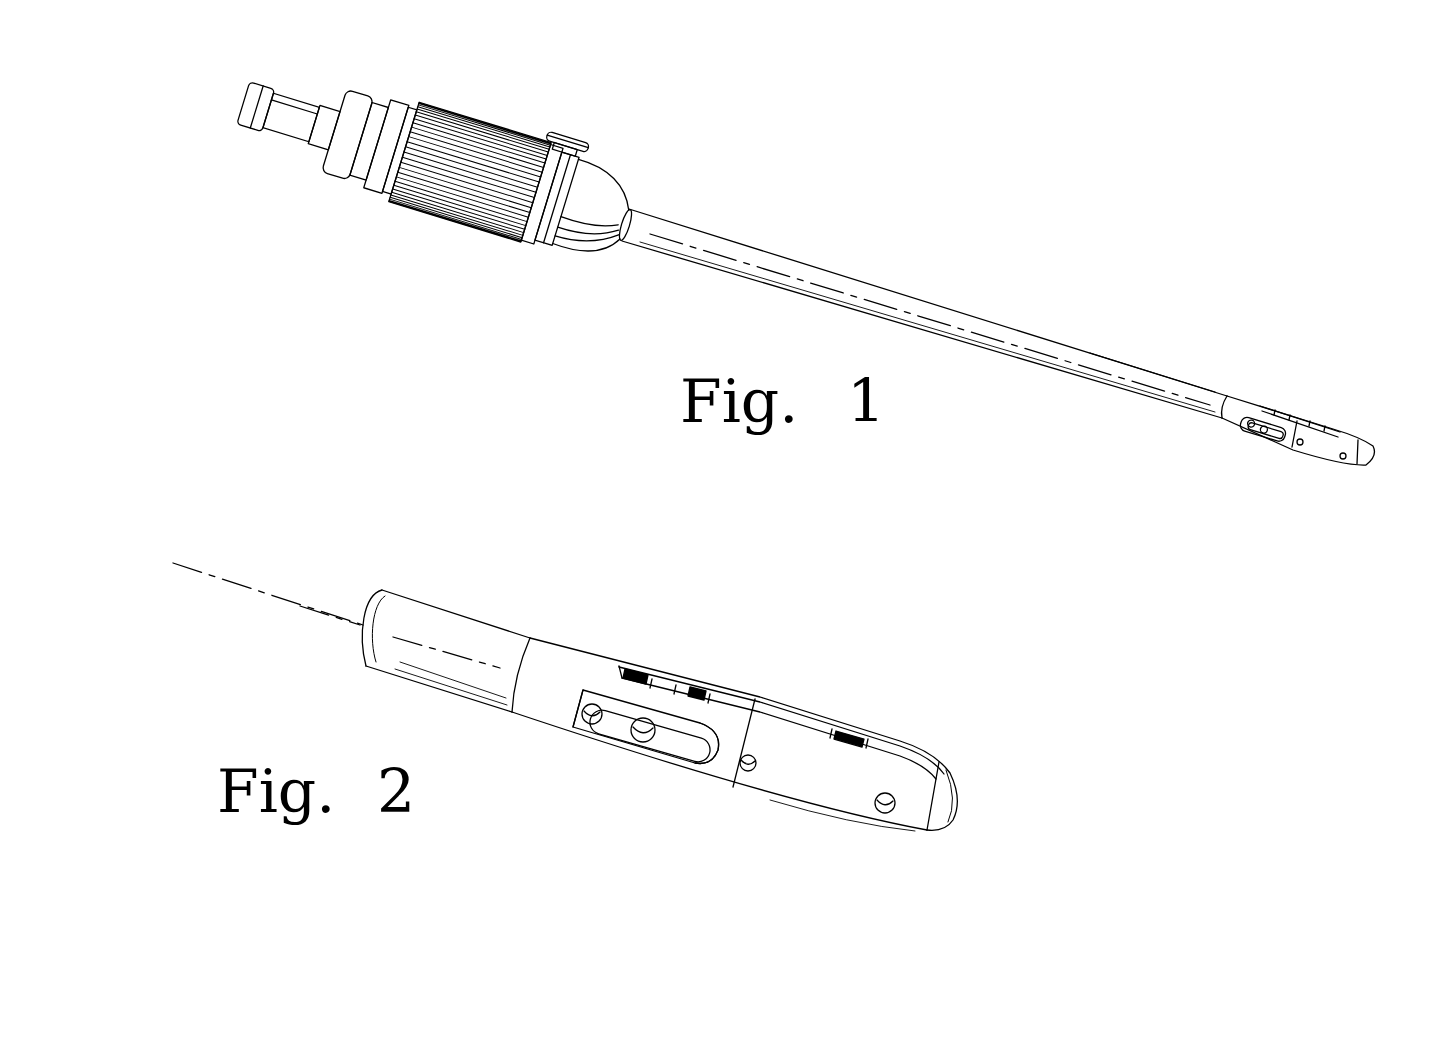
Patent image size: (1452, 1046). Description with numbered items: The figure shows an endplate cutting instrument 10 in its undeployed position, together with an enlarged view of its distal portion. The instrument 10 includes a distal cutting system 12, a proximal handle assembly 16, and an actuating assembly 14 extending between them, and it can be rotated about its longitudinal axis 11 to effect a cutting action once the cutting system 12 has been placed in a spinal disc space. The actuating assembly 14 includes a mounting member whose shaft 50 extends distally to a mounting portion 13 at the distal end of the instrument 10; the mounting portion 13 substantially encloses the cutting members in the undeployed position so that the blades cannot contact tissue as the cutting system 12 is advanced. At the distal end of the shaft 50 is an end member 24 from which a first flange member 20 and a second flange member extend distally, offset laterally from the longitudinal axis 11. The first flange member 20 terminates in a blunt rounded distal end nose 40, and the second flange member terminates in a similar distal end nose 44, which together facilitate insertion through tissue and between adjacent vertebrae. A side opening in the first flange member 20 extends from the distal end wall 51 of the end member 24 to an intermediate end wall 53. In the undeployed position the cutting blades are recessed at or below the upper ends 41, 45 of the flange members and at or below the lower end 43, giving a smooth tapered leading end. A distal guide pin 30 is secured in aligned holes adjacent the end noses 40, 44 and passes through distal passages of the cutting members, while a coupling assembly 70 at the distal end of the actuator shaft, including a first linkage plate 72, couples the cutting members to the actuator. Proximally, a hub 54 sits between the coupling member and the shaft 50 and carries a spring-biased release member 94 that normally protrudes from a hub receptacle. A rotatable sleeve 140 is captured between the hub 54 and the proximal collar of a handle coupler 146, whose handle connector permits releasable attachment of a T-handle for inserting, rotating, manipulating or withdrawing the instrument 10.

In FIG. 1, the endplate cutting instrument 10 is at (1060, 190).
In FIG. 2, the endplate cutting instrument 10 is at (593, 703).
In FIG. 1, the longitudinal axis 11 is at (692, 241).
In FIG. 2, the longitudinal axis 11 is at (196, 572).
In FIG. 1, the distal cutting system 12 is at (1356, 411).
In FIG. 2, the distal cutting system 12 is at (903, 731).
In FIG. 1, the mounting portion 13 is at (1326, 463).
In FIG. 2, the mounting portion 13 is at (773, 786).
In FIG. 1, the actuating assembly 14 is at (872, 266).
In FIG. 2, the actuating assembly 14 is at (451, 593).
In FIG. 1, the proximal handle assembly 16 is at (492, 104).
In FIG. 2, the first flange member 20 is at (848, 806).
In FIG. 2, the end member 24 is at (565, 660).
In FIG. 2, the distal guide pin 30 is at (692, 757).
In FIG. 2, the distal end nose 40 is at (940, 815).
In FIG. 2, the upper end 41 is at (738, 690).
In FIG. 2, the lower end 43 is at (865, 823).
In FIG. 2, the distal end nose 44 is at (958, 792).
In FIG. 2, the upper end 45 is at (795, 710).
In FIG. 1, the shaft 50 is at (1140, 372).
In FIG. 2, the shaft 50 is at (282, 632).
In FIG. 2, the distal end wall 51 is at (557, 731).
In FIG. 2, the intermediate end wall 53 is at (720, 788).
In FIG. 1, the hub 54 is at (558, 258).
In FIG. 1, the coupling assembly 70 is at (1243, 433).
In FIG. 2, the coupling assembly 70 is at (600, 736).
In FIG. 2, the first linkage plate 72 is at (617, 738).
In FIG. 1, the release member 94 is at (568, 136).
In FIG. 1, the sleeve 140 is at (447, 228).
In FIG. 1, the handle coupler 146 is at (361, 81).